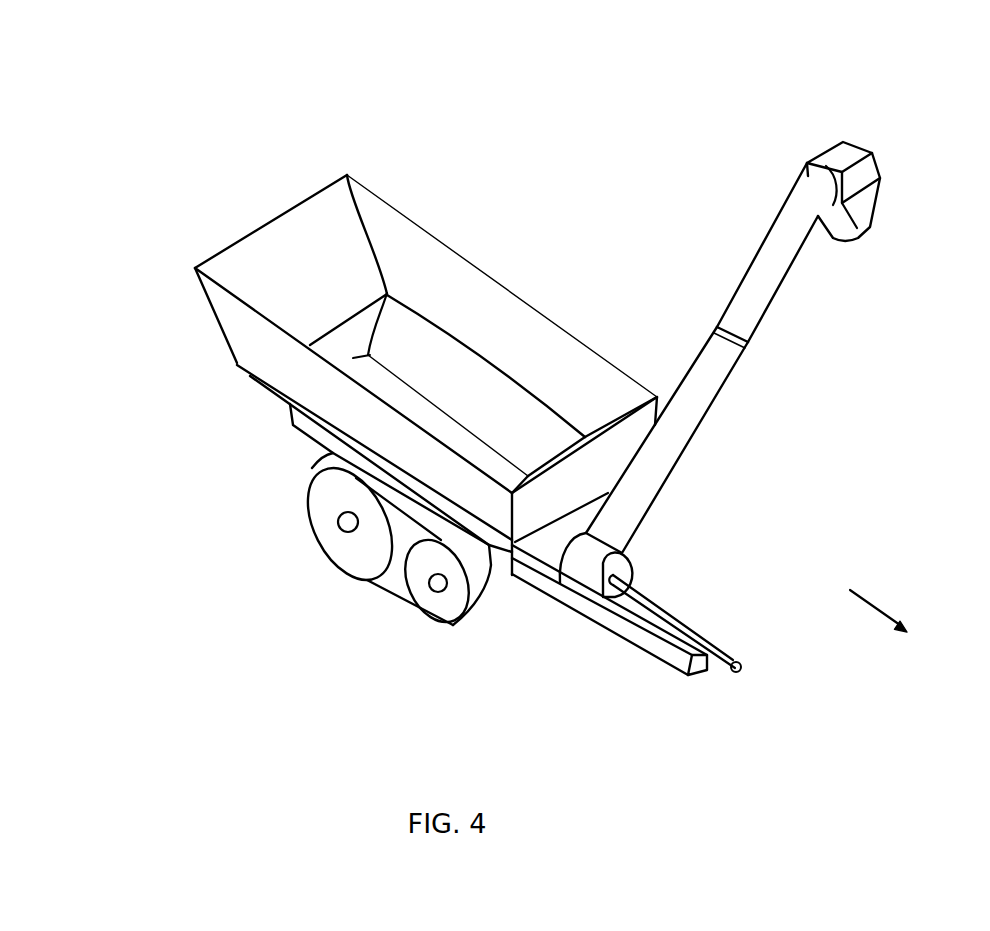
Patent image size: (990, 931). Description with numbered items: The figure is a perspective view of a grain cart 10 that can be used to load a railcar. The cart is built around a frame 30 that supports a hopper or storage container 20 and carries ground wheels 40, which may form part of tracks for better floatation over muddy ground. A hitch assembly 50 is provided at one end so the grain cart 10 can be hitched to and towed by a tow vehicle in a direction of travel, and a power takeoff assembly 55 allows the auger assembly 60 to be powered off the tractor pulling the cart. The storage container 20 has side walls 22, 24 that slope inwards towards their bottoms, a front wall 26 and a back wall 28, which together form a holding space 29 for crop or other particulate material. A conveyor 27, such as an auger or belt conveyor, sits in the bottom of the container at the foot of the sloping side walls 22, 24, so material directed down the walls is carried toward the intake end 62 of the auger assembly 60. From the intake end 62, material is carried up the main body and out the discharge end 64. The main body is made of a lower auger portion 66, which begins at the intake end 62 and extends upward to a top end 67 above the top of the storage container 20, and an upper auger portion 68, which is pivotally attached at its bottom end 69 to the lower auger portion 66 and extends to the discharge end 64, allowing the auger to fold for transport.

The grain cart 10 is at (552, 152).
The storage container 20 is at (552, 323).
The side wall 22 is at (468, 325).
The side wall 24 is at (272, 363).
The front wall 26 is at (582, 460).
The conveyor 27 is at (411, 405).
The back wall 28 is at (273, 222).
The holding space 29 is at (404, 306).
The frame 30 is at (297, 430).
The ground wheels 40 is at (352, 576).
The hitch assembly 50 is at (692, 673).
The power takeoff assembly 55 is at (730, 655).
The auger assembly 60 is at (705, 443).
The intake end 62 is at (583, 562).
The discharge end 64 is at (857, 142).
The lower auger portion 66 is at (650, 492).
The top end 67 is at (743, 340).
The upper auger portion 68 is at (767, 273).
The bottom end 69 is at (717, 327).